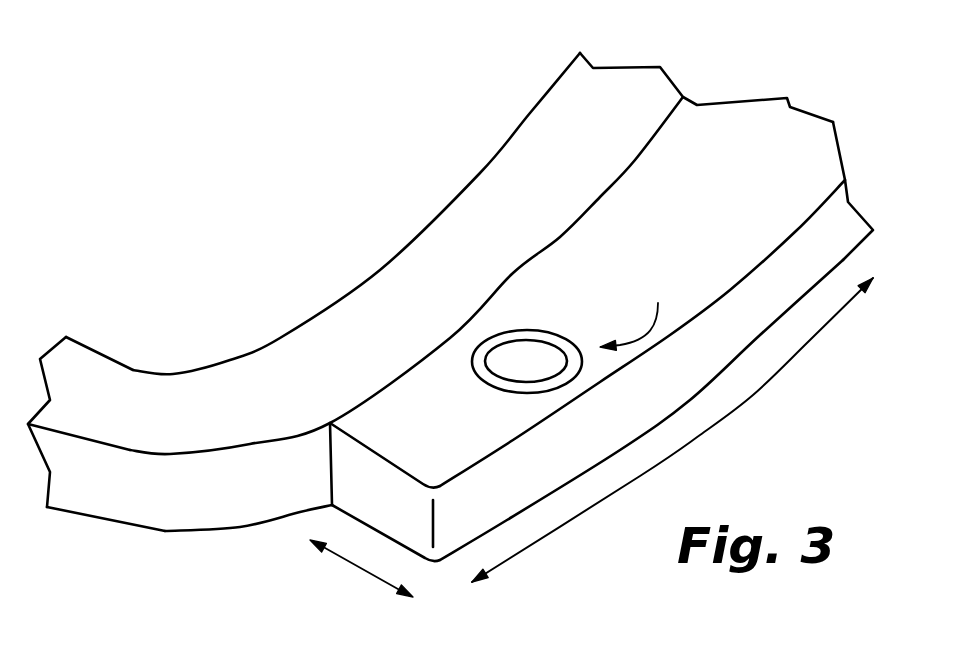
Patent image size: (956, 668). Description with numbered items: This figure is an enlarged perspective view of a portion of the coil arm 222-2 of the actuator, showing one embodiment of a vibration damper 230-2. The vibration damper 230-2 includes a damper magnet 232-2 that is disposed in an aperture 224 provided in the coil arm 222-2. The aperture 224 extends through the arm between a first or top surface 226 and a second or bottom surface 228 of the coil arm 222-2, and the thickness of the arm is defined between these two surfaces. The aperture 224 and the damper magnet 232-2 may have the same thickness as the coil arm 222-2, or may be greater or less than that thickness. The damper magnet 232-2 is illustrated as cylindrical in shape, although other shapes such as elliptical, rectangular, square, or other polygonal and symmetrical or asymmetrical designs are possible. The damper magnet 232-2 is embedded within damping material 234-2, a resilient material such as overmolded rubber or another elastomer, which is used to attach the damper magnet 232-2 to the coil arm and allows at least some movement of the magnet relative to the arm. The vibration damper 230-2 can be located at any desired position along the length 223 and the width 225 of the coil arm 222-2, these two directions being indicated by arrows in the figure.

The coil arm 222-2 is at (747, 143).
The first or top surface 226 is at (788, 167).
The aperture 224 is at (567, 383).
The second or bottom surface 228 is at (727, 373).
The length 223 is at (673, 453).
The damping material 234-2 is at (497, 385).
The damper magnet 232-2 is at (533, 352).
The vibration damper 230-2 is at (654, 315).
The width 225 is at (353, 567).